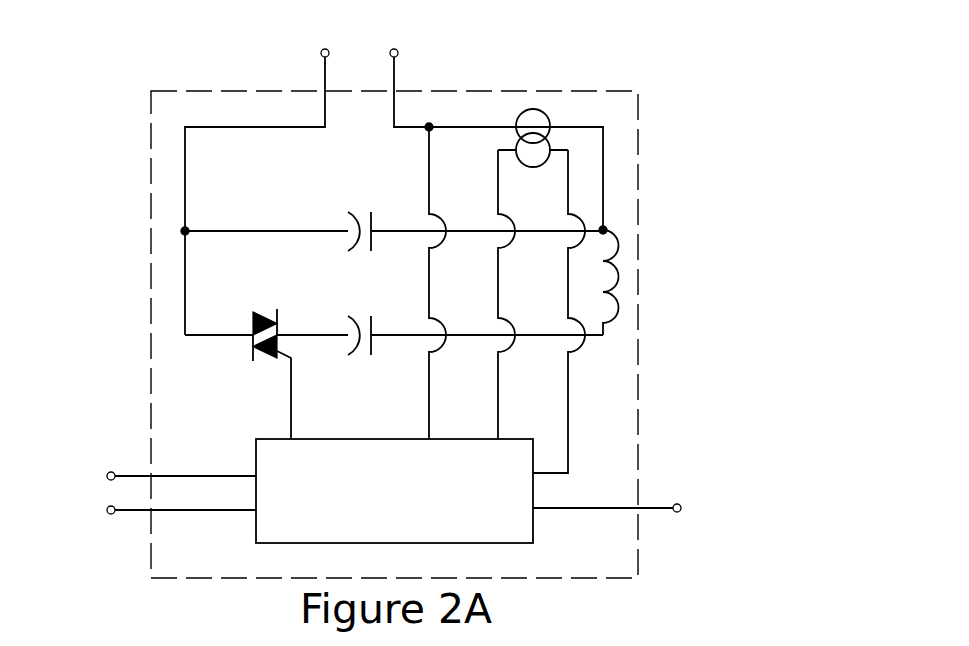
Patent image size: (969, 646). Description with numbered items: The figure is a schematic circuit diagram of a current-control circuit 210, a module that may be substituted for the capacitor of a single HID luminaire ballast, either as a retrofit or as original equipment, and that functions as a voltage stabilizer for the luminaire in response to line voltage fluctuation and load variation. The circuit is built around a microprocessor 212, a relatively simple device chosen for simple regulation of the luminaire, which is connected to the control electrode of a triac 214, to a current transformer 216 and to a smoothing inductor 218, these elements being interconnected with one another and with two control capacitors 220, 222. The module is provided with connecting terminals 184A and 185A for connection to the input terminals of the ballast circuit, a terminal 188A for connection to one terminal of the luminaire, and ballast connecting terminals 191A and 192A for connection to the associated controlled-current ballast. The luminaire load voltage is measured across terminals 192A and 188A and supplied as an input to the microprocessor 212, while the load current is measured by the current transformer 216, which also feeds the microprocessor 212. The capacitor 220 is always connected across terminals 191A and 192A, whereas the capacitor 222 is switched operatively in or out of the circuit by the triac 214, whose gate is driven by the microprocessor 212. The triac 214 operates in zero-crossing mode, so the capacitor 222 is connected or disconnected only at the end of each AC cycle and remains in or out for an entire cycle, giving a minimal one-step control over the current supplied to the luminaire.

The current-control circuit 210 is at (640, 174).
The ballast connecting terminal 191A is at (268, 177).
The ballast connecting terminal 192A is at (490, 125).
The current transformer 216 is at (547, 112).
The smoothing inductor 218 is at (618, 280).
The control capacitor 220 is at (362, 214).
The control capacitor 222 is at (362, 318).
The triac 214 is at (266, 310).
The microprocessor 212 is at (525, 525).
The connecting terminal 185A is at (149, 467).
The connecting terminal 184A is at (149, 514).
The connecting terminal 188A is at (643, 510).